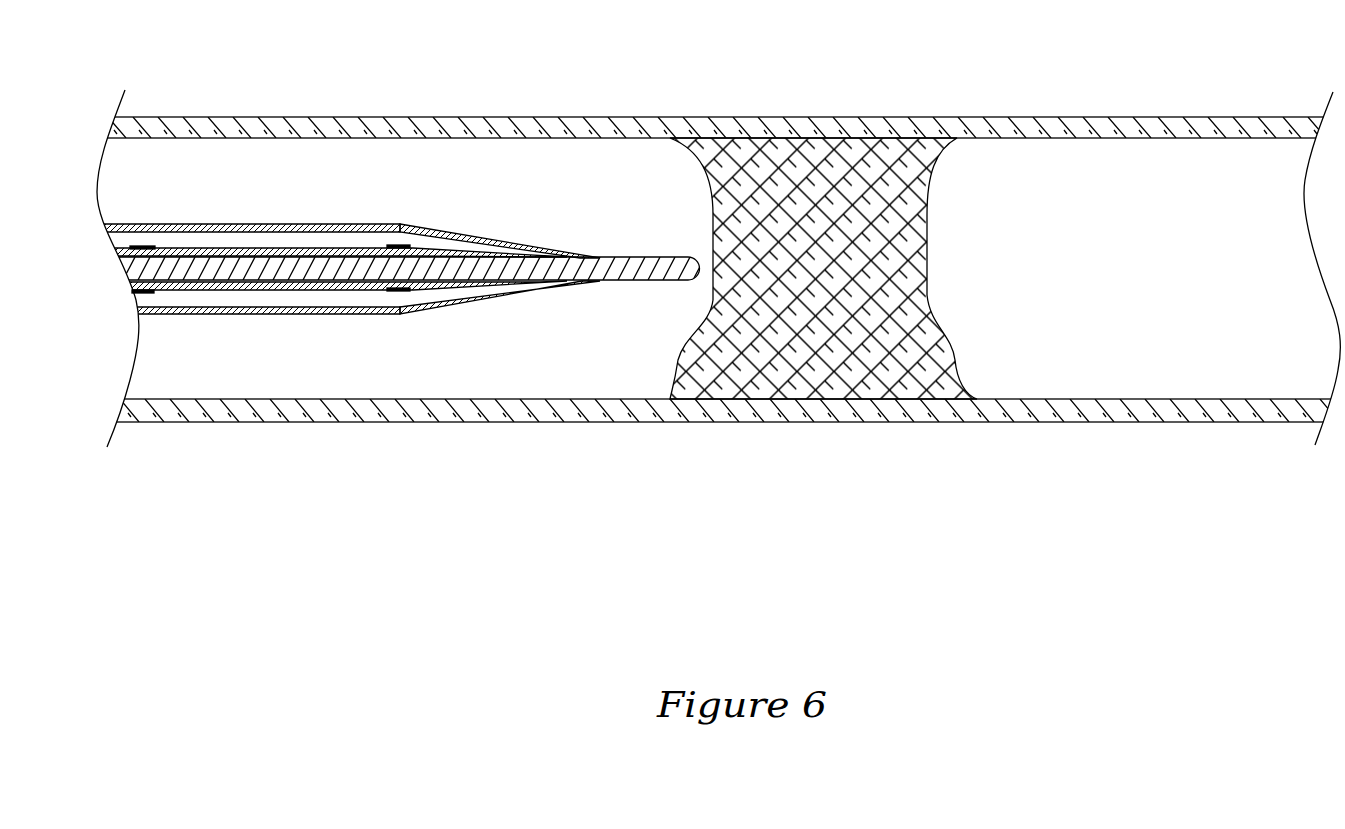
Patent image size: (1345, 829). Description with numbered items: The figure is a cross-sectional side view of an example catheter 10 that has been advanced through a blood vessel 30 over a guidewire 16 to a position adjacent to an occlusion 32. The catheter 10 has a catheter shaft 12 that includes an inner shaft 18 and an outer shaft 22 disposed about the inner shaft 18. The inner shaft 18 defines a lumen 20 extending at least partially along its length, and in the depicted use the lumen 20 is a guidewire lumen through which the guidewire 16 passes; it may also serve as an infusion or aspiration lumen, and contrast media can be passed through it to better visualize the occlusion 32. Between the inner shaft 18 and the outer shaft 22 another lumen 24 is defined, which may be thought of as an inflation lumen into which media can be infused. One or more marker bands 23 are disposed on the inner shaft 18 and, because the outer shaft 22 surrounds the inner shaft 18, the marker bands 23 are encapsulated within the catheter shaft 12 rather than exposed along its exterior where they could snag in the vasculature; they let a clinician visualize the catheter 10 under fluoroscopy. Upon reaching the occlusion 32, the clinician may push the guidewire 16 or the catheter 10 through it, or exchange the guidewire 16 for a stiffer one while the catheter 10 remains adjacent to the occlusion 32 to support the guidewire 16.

The catheter 10 is at (390, 258).
The catheter shaft 12 is at (163, 223).
The guidewire 16 is at (653, 265).
The inner shaft 18 is at (208, 288).
The lumen 20 is at (320, 253).
The outer shaft 22 is at (367, 314).
The marker bands 23 is at (143, 293).
The lumen 24 is at (438, 300).
The blood vessel 30 is at (1047, 130).
The occlusion 32 is at (797, 173).